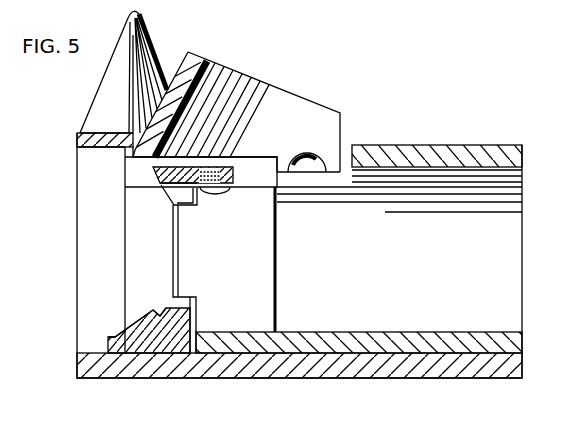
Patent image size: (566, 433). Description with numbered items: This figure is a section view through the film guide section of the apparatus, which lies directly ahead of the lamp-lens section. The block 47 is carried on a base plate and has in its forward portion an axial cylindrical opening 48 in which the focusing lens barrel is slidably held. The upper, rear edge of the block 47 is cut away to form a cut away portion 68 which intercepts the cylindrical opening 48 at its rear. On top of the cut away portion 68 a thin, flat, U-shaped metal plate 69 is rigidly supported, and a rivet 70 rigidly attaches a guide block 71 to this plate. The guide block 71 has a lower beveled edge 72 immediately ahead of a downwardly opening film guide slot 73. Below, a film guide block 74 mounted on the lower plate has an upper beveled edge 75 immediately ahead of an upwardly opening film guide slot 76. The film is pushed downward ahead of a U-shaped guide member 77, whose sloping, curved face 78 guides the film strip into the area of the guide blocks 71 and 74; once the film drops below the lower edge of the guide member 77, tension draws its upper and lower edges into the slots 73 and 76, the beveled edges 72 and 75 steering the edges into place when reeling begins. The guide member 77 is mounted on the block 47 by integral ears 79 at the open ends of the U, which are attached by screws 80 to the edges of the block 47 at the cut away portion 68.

The block 47 is at (449, 150).
The axial cylindrical opening 48 is at (508, 229).
The cut away portion 68 is at (292, 185).
The U-shaped metal plate 69 is at (250, 192).
The rivet 70 is at (233, 173).
The guide block 71 is at (155, 172).
The beveled edge 72 is at (158, 183).
The film guide slot 73 is at (163, 186).
The film guide block 74 is at (178, 325).
The beveled edge 75 is at (138, 317).
The film guide slot 76 is at (161, 311).
The U-shaped guide member 77 is at (247, 83).
The sloping curved face 78 is at (180, 76).
The ears 79 is at (323, 177).
The screws 80 is at (324, 165).